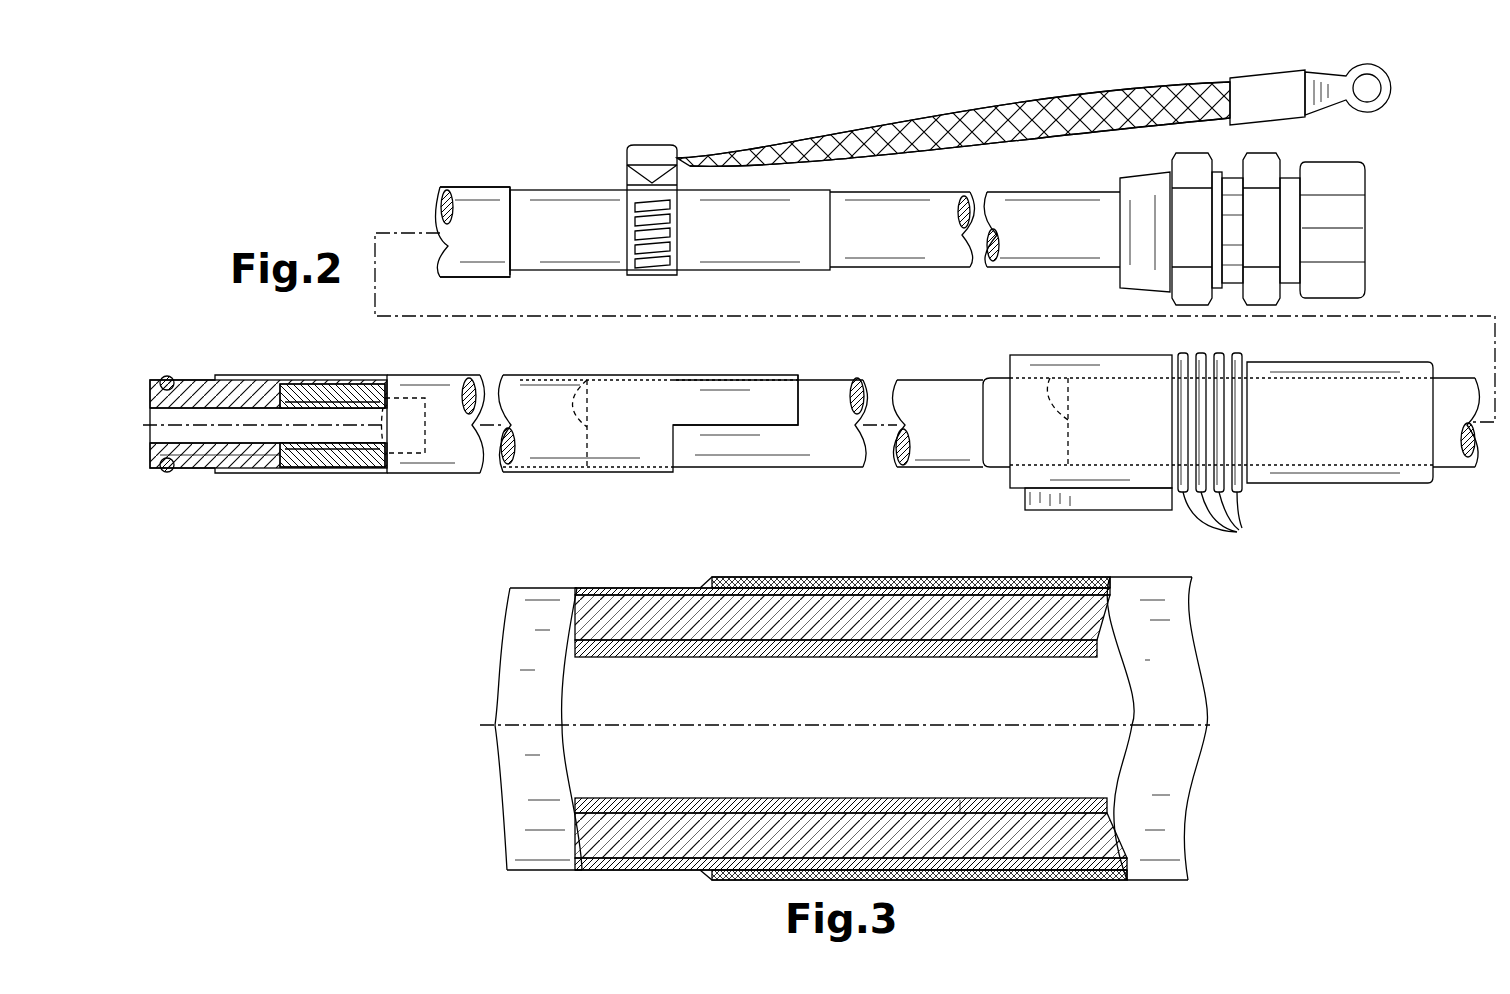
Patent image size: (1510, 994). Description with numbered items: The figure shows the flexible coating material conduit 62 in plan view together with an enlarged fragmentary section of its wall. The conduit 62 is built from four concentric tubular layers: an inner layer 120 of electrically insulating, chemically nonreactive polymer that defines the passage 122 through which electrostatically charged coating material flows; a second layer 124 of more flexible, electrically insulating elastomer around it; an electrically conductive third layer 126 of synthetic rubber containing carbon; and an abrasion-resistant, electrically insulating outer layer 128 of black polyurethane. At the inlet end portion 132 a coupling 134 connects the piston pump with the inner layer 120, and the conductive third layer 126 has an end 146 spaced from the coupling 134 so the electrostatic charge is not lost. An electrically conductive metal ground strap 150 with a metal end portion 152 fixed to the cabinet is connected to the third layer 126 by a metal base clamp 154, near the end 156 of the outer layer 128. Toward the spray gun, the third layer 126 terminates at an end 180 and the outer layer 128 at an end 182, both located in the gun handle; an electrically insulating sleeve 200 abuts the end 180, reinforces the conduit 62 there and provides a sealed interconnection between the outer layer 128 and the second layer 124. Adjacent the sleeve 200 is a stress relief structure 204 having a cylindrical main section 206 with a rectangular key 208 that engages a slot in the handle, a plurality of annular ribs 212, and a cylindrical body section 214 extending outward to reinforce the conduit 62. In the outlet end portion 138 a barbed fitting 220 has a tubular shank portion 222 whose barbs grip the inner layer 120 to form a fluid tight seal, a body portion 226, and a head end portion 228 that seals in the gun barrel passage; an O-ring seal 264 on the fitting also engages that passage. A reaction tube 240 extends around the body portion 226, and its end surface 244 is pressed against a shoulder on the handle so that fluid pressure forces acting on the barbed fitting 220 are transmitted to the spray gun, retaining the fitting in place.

In FIG. 2, the coating material conduit 62 is at (388, 165).
In FIG. 3, the coating material conduit 62 is at (725, 895).
In FIG. 2, the inner layer 120 is at (318, 470).
In FIG. 3, the inner layer 120 is at (590, 650).
In FIG. 3, the passage 122 is at (590, 765).
In FIG. 2, the second layer 124 is at (918, 233).
In FIG. 3, the second layer 124 is at (595, 622).
In FIG. 2, the third layer 126 is at (730, 230).
In FIG. 3, the third layer 126 is at (995, 595).
In FIG. 2, the outer layer 128 is at (472, 245).
In FIG. 3, the outer layer 128 is at (628, 588).
In FIG. 2, the inlet end portion 132 is at (758, 135).
In FIG. 2, the coupling 134 is at (1258, 300).
In FIG. 2, the outlet end portion 138 is at (715, 490).
In FIG. 2, the end of third layer 146 is at (835, 240).
In FIG. 2, the ground strap 150 is at (1087, 108).
In FIG. 2, the metal end portion 152 is at (1283, 112).
In FIG. 2, the base clamp 154 is at (650, 195).
In FIG. 2, the end of outer layer 156 is at (510, 185).
In FIG. 2, the end of third layer 180 is at (1047, 372).
In FIG. 3, the end of third layer 180 is at (975, 855).
In FIG. 2, the end of outer layer 182 is at (575, 388).
In FIG. 2, the sleeve 200 is at (995, 385).
In FIG. 3, the sleeve 200 is at (900, 880).
In FIG. 2, the stress relief structure 204 is at (1160, 352).
In FIG. 2, the main section 206 is at (1080, 475).
In FIG. 2, the rectangular key 208 is at (1098, 495).
In FIG. 2, the annular ribs 212 is at (1237, 505).
In FIG. 2, the body section 214 is at (1345, 362).
In FIG. 2, the barbed fitting 220 is at (212, 372).
In FIG. 2, the shank portion 222 is at (318, 395).
In FIG. 2, the body portion 226 is at (232, 472).
In FIG. 2, the head end portion 228 is at (172, 472).
In FIG. 2, the reaction tube 240 is at (445, 380).
In FIG. 2, the end surface 244 is at (800, 395).
In FIG. 2, the O-ring seal 264 is at (165, 375).